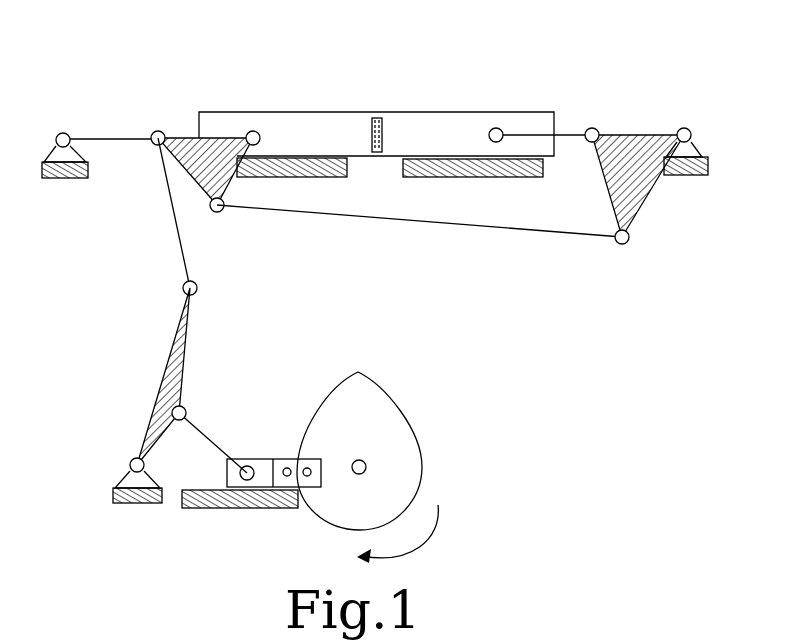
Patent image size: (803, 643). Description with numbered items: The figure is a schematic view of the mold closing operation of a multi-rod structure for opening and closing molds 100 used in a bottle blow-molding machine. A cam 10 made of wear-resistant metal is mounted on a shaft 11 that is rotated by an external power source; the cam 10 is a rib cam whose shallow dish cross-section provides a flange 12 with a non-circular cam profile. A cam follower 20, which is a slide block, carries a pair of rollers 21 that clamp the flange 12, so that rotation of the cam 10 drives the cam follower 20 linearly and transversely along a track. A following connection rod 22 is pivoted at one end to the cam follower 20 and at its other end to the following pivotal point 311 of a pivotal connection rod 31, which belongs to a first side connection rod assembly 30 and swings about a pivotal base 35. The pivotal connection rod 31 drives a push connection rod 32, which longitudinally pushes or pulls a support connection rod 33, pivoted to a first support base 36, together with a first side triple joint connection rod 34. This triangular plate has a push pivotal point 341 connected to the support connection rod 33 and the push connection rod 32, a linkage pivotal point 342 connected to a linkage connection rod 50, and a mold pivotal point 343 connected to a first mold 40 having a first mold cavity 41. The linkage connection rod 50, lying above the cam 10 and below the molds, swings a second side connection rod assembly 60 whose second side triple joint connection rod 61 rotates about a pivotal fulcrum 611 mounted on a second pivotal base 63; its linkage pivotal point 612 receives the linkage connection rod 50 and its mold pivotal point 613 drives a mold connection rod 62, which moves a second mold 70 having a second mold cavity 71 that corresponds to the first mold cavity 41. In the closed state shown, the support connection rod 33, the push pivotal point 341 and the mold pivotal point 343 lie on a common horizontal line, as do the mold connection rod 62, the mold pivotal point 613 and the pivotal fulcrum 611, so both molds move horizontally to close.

The multi-rod structure for opening and closing molds 100 is at (73, 78).
The cam 10 is at (398, 417).
The shaft 11 is at (366, 466).
The flange 12 is at (358, 372).
The cam follower 20 is at (245, 458).
The rollers 21 is at (305, 477).
The following connection rod 22 is at (213, 433).
The first side connection rod assembly 30 is at (145, 278).
The pivotal connection rod 31 is at (178, 330).
The following pivotal point 311 is at (178, 421).
The push connection rod 32 is at (173, 220).
The support connection rod 33 is at (105, 138).
The first side triple joint connection rod 34 is at (184, 137).
The push pivotal point 341 is at (155, 147).
The linkage pivotal point 342 is at (218, 212).
The mold pivotal point 343 is at (254, 131).
The pivotal base 35 is at (130, 466).
The first support base 36 is at (53, 158).
The first mold 40 is at (319, 112).
The first mold cavity 41 is at (365, 157).
The linkage connection rod 50 is at (418, 224).
The second side connection rod assembly 60 is at (658, 206).
The second side triple joint connection rod 61 is at (643, 134).
The pivotal fulcrum 611 is at (690, 130).
The linkage pivotal point 612 is at (622, 244).
The mold pivotal point 613 is at (594, 128).
The mold connection rod 62 is at (566, 132).
The second pivotal base 63 is at (700, 150).
The second mold 70 is at (437, 112).
The second mold cavity 71 is at (382, 157).